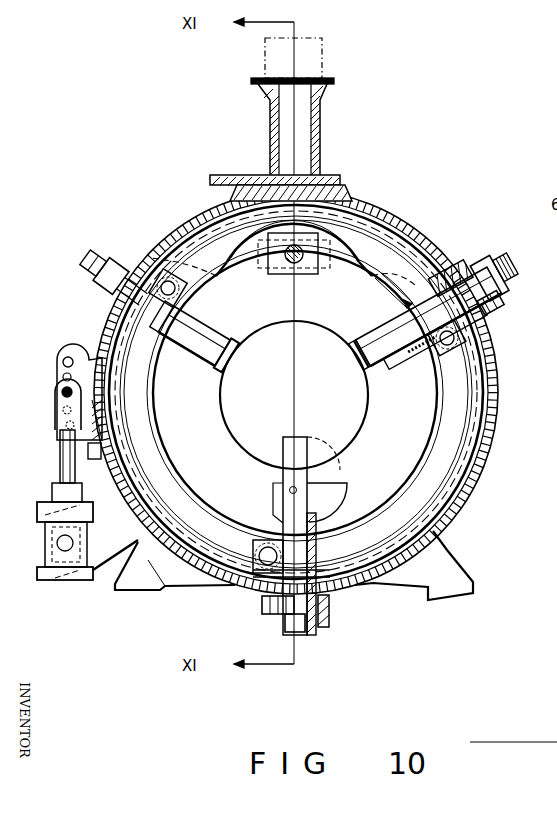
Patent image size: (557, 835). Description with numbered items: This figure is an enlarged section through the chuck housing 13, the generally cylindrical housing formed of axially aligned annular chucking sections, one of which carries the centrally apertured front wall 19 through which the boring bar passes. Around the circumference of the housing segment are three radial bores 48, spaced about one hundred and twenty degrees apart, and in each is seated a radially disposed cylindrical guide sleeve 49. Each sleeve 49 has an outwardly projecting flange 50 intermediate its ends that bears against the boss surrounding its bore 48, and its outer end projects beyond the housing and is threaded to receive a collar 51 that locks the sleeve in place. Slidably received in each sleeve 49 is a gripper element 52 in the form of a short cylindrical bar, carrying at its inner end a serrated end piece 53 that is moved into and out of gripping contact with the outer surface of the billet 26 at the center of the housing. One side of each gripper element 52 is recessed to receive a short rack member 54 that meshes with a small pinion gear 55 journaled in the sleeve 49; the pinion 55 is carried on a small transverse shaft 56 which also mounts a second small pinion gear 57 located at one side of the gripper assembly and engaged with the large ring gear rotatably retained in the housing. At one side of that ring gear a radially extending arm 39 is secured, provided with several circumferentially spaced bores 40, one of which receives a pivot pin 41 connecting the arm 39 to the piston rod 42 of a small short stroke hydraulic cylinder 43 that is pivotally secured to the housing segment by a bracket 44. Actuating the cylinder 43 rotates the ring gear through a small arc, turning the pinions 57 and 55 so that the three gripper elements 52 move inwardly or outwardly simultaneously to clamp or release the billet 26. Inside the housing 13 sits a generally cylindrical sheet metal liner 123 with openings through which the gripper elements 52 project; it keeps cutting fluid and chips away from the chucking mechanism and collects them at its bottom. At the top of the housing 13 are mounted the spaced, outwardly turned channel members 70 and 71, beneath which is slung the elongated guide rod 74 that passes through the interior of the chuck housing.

The chuck housing 13 is at (371, 199).
The front wall 19 is at (414, 467).
The billet 26 is at (296, 324).
The arm 39 is at (72, 350).
The bores 40 is at (60, 364).
The pivot pin 41 is at (58, 396).
The piston rod 42 is at (62, 444).
The hydraulic cylinder 43 is at (58, 506).
The bracket 44 is at (116, 560).
The radial bores 48 is at (445, 296).
The guide sleeves 49 is at (204, 316).
The flanges 50 is at (425, 284).
The threaded collars 51 is at (113, 260).
The gripper element 52 is at (211, 350).
The serrated end piece 53 is at (239, 350).
The rack member 54 is at (402, 358).
The pinion gear 55 is at (466, 360).
The shaft 56 is at (200, 296).
The second pinion gear 57 is at (217, 272).
The channel member 70 is at (270, 104).
The channel member 71 is at (320, 103).
The guide rod 74 is at (296, 264).
The sheet metal liner 123 is at (172, 476).